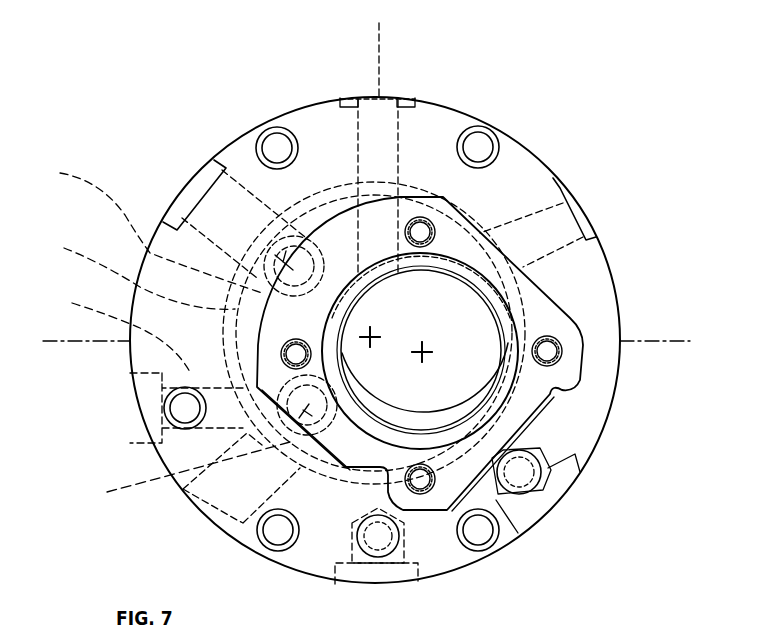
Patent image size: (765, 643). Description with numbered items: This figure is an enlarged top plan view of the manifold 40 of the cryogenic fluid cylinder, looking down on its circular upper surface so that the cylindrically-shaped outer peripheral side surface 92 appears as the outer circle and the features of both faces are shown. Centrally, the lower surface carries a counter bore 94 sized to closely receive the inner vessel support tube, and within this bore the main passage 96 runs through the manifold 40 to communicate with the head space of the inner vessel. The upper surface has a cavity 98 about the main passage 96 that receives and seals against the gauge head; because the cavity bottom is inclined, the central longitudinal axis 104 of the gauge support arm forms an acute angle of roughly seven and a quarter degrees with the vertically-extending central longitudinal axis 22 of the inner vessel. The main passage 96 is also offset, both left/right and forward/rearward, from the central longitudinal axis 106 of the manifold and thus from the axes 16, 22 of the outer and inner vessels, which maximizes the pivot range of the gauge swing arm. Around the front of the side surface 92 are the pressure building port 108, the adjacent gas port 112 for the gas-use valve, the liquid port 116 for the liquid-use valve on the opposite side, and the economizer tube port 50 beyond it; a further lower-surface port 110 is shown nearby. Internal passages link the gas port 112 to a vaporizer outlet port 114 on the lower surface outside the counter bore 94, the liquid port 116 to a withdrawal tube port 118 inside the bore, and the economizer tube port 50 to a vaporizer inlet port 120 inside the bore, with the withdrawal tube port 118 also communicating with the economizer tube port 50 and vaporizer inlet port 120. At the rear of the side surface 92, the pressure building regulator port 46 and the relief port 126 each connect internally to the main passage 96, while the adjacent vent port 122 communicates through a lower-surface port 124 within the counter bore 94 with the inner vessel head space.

The manifold 40 is at (362, 76).
The pressure building regulator port 46 is at (400, 98).
The outer peripheral side surface 92 is at (290, 110).
The vent port 122 is at (183, 190).
The port 124 is at (139, 227).
The counter bore 94 is at (131, 273).
The vaporizer inlet port 120 is at (109, 332).
The economizer tube port 50 is at (136, 407).
The liquid port 116 is at (200, 517).
The withdrawal tube port 118 is at (178, 473).
The central longitudinal axis of the outer vessel 16 is at (371, 337).
The central longitudinal axis of the inner vessel 22 is at (370, 337).
The central longitudinal axis of the liquid level gauge support arm 104 is at (423, 350).
The central longitudinal axis of the manifold 106 is at (422, 352).
The cavity 98 is at (560, 388).
The main passage 96 is at (445, 430).
The vaporizer outlet port 114 is at (542, 460).
The gas port 112 is at (546, 517).
The fastener 110 is at (355, 530).
The pressure building port 108 is at (373, 583).
The relief port 126 is at (588, 208).